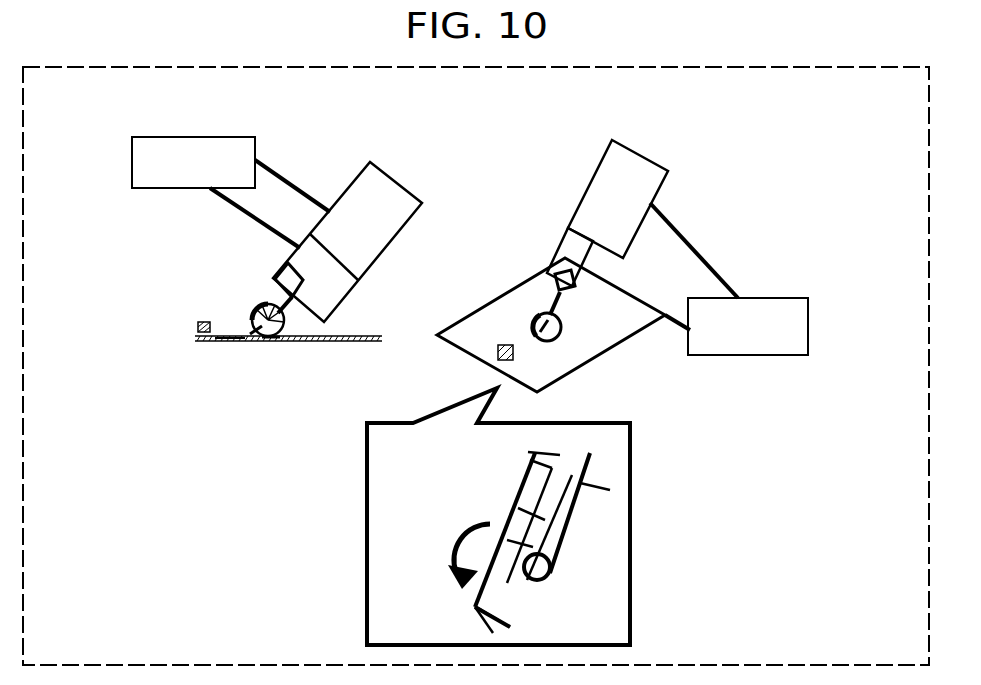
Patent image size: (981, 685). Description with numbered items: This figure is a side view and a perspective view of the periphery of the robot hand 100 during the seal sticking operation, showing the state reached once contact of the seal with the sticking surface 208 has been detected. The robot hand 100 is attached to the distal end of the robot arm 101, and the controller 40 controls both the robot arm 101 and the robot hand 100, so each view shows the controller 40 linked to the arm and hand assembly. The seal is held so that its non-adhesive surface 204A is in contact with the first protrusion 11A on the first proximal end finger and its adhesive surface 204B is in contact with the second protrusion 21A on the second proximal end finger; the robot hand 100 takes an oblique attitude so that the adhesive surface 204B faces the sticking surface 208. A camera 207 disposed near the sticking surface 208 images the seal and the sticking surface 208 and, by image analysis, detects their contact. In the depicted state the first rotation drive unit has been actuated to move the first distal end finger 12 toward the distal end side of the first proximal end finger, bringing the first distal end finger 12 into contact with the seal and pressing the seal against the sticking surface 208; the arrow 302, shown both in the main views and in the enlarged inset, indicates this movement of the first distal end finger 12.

The controller 40 is at (170, 137).
The robot arm 101 is at (342, 197).
The robot hand 100 is at (302, 237).
The first protrusion 11A is at (270, 305).
The first distal end finger 12 is at (257, 310).
The arrow 302 is at (253, 343).
The non-adhesive surface 204A is at (253, 333).
The adhesive surface 204B is at (270, 342).
The second protrusion 21A is at (280, 342).
The sticking surface 208 is at (237, 338).
The camera 207 is at (197, 326).